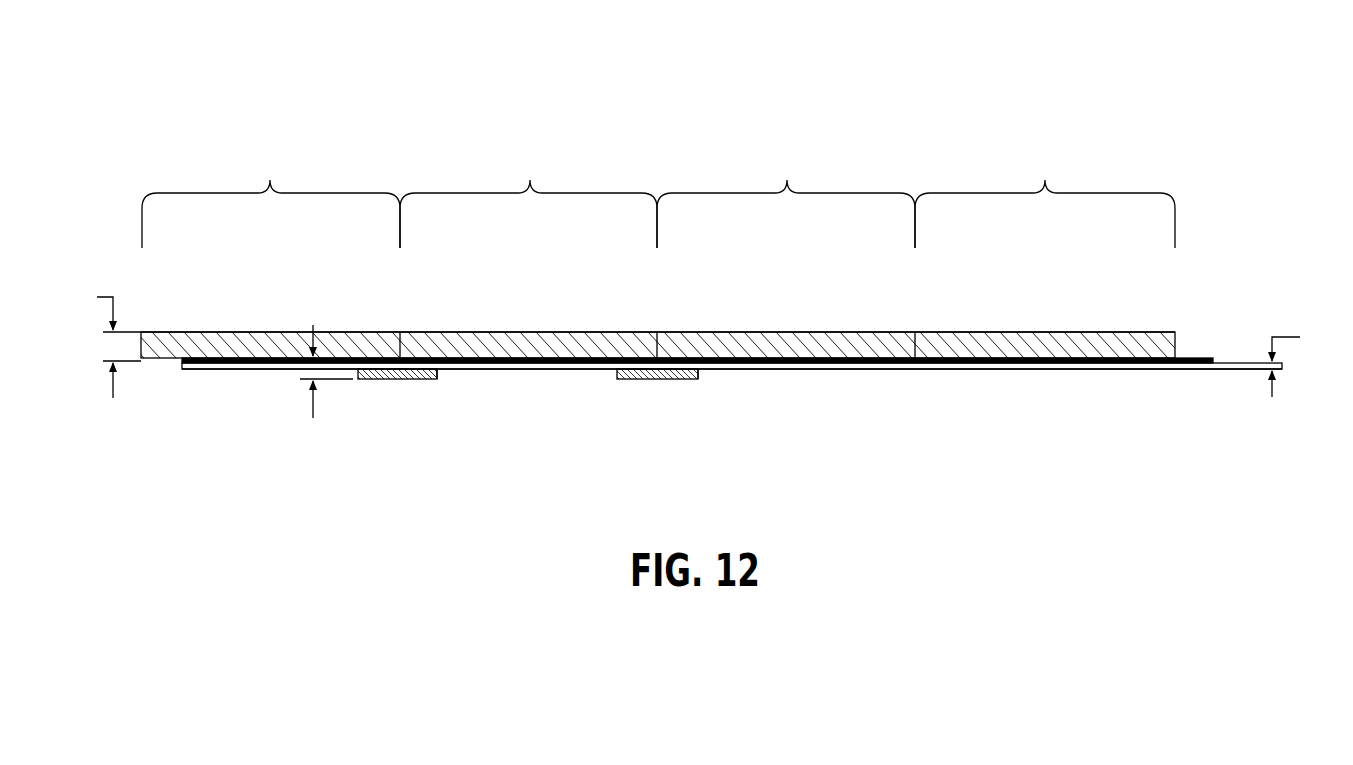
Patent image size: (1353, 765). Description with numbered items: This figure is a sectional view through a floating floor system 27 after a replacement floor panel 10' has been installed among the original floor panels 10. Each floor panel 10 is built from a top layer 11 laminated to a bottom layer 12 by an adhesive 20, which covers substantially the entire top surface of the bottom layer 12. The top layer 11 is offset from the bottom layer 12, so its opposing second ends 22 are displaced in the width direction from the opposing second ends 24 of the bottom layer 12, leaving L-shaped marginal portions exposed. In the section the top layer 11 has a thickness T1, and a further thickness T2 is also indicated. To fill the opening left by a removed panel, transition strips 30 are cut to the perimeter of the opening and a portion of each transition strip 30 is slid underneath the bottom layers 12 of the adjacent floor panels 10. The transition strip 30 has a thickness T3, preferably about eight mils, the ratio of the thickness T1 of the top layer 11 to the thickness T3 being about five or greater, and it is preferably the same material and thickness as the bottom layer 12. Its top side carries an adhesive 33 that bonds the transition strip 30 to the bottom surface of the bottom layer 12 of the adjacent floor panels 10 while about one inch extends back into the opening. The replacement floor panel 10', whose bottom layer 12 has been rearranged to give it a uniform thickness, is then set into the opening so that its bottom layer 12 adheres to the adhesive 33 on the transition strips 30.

The floor panel 10 is at (658, 189).
The replacement floor panel 10' is at (528, 189).
The top layer 11 is at (181, 330).
The bottom layer 12 is at (247, 372).
The adhesive 20 is at (1213, 360).
The second ends of the top layer 22 is at (400, 345).
The second ends of the bottom layer 24 is at (1213, 369).
The floating floor system 27 is at (942, 118).
The transition strip 30 is at (378, 380).
The adhesive 33 is at (440, 370).
The thickness of the top layer T1 is at (103, 339).
The backing layer thickness T2 is at (1305, 359).
The thickness of the transition strip T3 is at (303, 379).